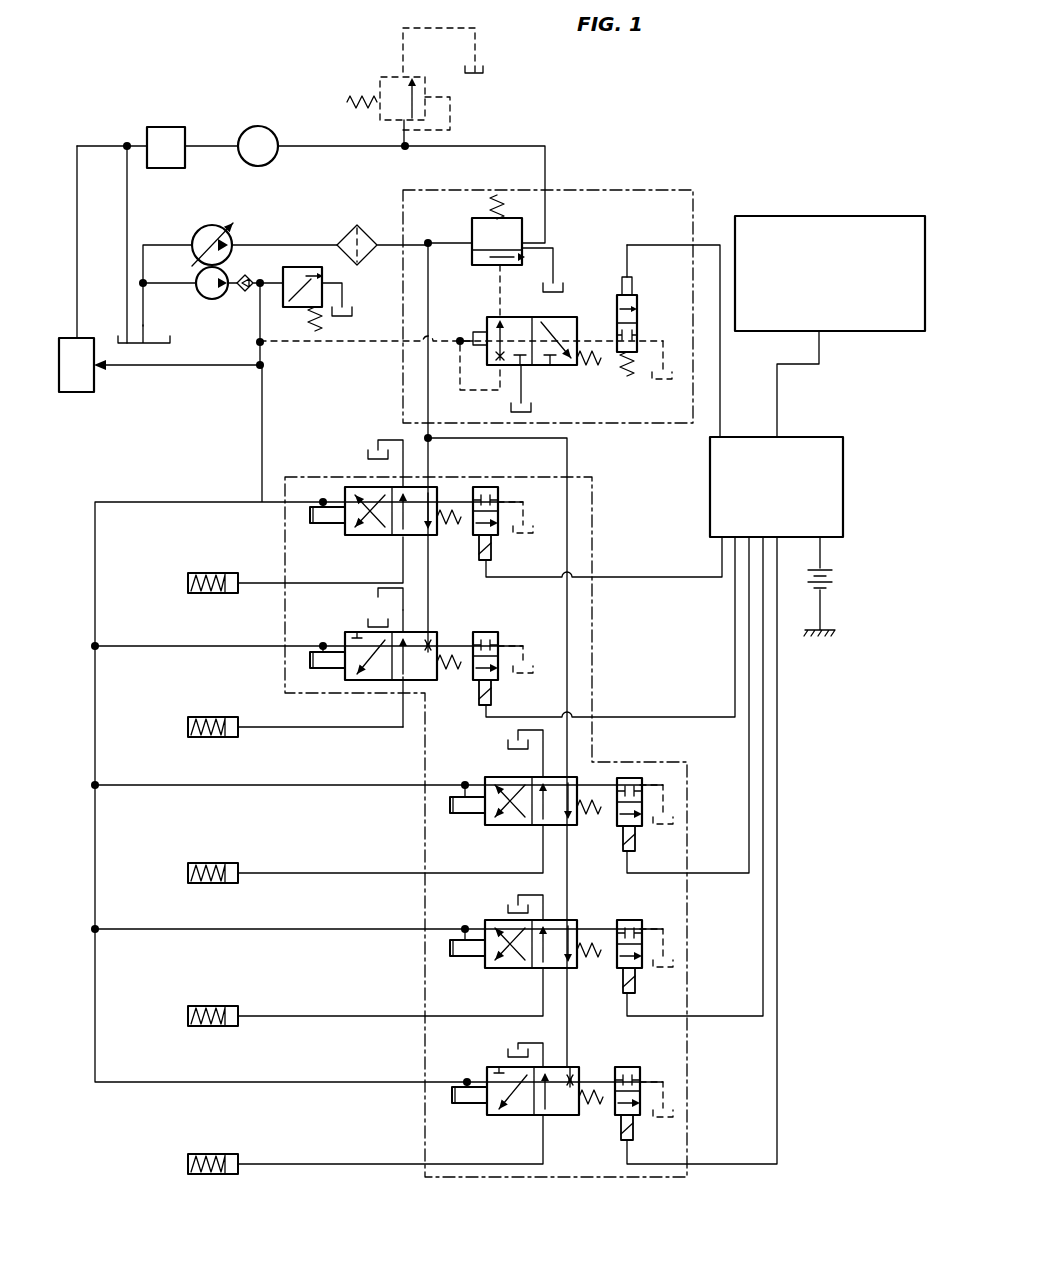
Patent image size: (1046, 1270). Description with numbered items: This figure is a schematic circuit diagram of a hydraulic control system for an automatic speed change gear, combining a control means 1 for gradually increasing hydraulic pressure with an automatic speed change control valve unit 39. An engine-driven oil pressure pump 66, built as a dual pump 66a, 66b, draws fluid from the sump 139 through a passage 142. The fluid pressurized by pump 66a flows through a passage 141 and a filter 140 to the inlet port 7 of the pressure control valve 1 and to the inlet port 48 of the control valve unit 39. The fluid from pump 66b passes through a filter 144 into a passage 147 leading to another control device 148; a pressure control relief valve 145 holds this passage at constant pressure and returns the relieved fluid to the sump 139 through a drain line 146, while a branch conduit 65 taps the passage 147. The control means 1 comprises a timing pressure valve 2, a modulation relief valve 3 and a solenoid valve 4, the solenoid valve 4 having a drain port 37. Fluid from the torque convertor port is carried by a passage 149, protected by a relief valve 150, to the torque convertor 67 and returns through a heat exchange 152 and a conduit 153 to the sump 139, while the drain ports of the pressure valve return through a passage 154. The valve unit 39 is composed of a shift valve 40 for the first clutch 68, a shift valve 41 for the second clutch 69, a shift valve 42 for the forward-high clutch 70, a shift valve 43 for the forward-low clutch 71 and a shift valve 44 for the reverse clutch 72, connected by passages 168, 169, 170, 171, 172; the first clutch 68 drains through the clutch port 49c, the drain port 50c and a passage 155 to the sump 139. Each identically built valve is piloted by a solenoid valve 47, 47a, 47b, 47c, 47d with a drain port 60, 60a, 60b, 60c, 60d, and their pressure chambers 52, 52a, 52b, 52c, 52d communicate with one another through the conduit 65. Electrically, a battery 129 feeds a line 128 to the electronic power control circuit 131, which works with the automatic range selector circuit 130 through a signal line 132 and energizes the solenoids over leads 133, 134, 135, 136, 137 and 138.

The hydraulic pressure control valve 1 is at (630, 190).
The timing pressure valve 2 is at (557, 367).
The modulation relief valve 3 is at (505, 267).
The solenoid valve 4 is at (637, 298).
The inlet port 7 is at (431, 243).
The drain port 37 is at (657, 382).
The automatic speed change control valve unit 39 is at (594, 568).
The shift valve 40 is at (437, 678).
The shift valve 41 is at (438, 537).
The shift valve 42 is at (577, 920).
The shift valve 43 is at (578, 1067).
The shift valve 44 is at (577, 778).
The solenoid valve 47 is at (640, 1067).
The solenoid valve 47a is at (637, 920).
The solenoid valve 47b is at (640, 783).
The solenoid valve 47c is at (489, 632).
The solenoid valve 47d is at (499, 488).
The inlet port 48 is at (429, 450).
The clutch port 49c is at (404, 688).
The drain port 50c is at (404, 632).
The pressure chamber 52 is at (470, 1108).
The pressure chamber 52a is at (463, 958).
The pressure chamber 52b is at (465, 814).
The pressure chamber 52c is at (336, 622).
The pressure chamber 52d is at (328, 526).
The drain port 60 is at (673, 1111).
The drain port 60a is at (668, 948).
The drain port 60b is at (674, 821).
The drain port 60c is at (542, 668).
The drain port 60d is at (542, 524).
The branch conduit 65 is at (262, 452).
The oil pressure pump 66 is at (193, 238).
The pump 66a is at (210, 225).
The pump 66b is at (210, 300).
The torque convertor 67 is at (266, 135).
The first clutch 68 is at (190, 717).
The second clutch 69 is at (190, 574).
The forward-high clutch 70 is at (193, 1008).
The forward-low clutch 71 is at (195, 1156).
The reverse clutch 72 is at (196, 865).
The line 128 is at (822, 555).
The battery 129 is at (832, 583).
The automatic range selector circuit 130 is at (888, 337).
The electronic power control circuit 131 is at (843, 516).
The signal line 132 is at (777, 388).
The solenoid lead 133 is at (672, 579).
The solenoid lead 134 is at (632, 718).
The solenoid lead 135 is at (703, 875).
The solenoid lead 136 is at (702, 1016).
The solenoid lead 137 is at (778, 1006).
The solenoid lead 138 is at (720, 366).
The sump 139 is at (168, 343).
The filter 140 is at (347, 227).
The passage 141 is at (258, 243).
The passage 142 is at (146, 326).
The filter 144 is at (245, 295).
The pressure control relief valve 145 is at (301, 303).
The drain line 146 is at (352, 305).
The passage 147 is at (200, 367).
The control device 148 is at (100, 375).
The passage 149 is at (549, 166).
The relief valve 150 is at (393, 85).
The heat exchange 152 is at (177, 133).
The conduit 153 is at (123, 290).
The passage 154 is at (557, 265).
The passage 155 is at (380, 443).
The passage 168 is at (330, 726).
The passage 169 is at (259, 585).
The passage 170 is at (316, 1014).
The passage 171 is at (316, 1163).
The passage 172 is at (322, 870).